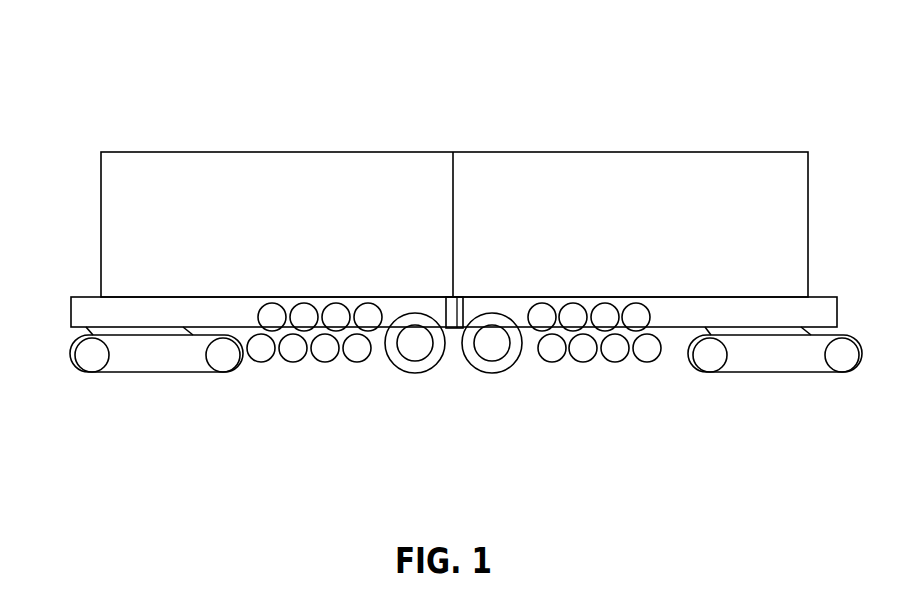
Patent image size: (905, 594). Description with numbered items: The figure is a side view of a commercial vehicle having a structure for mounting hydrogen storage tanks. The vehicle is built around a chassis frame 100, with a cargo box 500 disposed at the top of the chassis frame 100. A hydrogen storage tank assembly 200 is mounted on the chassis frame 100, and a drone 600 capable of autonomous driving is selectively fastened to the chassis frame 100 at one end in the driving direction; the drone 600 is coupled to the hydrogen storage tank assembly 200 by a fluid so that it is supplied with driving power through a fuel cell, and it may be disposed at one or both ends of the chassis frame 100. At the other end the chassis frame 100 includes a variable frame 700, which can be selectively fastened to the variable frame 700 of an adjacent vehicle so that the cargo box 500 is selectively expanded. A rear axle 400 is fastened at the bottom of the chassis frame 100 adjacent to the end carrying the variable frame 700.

The chassis frame 100 is at (88, 305).
The hydrogen storage tank assembly 200 is at (308, 374).
The rear axle 400 is at (418, 350).
The cargo box 500 is at (278, 170).
The drone 600 is at (95, 360).
The variable frame 700 is at (447, 296).